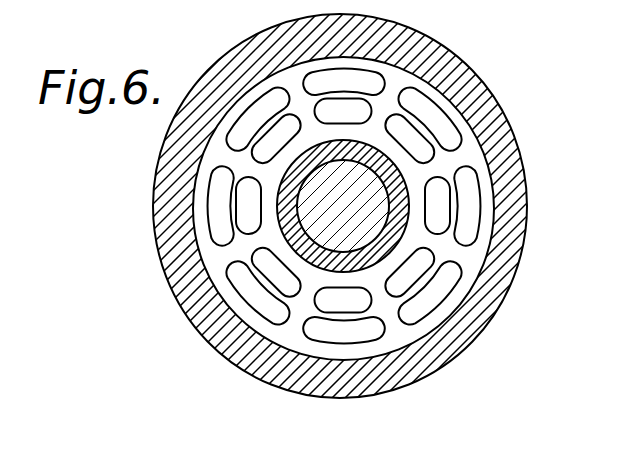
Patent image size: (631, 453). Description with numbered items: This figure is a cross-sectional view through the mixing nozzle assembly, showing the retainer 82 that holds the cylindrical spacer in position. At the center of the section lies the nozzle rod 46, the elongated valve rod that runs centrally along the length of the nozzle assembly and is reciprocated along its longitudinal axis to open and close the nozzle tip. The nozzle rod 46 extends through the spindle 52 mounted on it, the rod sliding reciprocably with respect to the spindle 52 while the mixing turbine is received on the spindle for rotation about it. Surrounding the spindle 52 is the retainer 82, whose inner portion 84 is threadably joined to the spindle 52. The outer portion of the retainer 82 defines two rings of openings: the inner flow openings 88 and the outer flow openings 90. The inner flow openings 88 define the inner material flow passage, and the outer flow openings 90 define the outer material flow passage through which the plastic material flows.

The nozzle rod 46 is at (343, 206).
The spindle 52 is at (383, 230).
The retainer 82 is at (507, 192).
The inner portion 84 is at (482, 90).
The inner flow openings 88 is at (258, 146).
The outer flow openings 90 is at (236, 282).